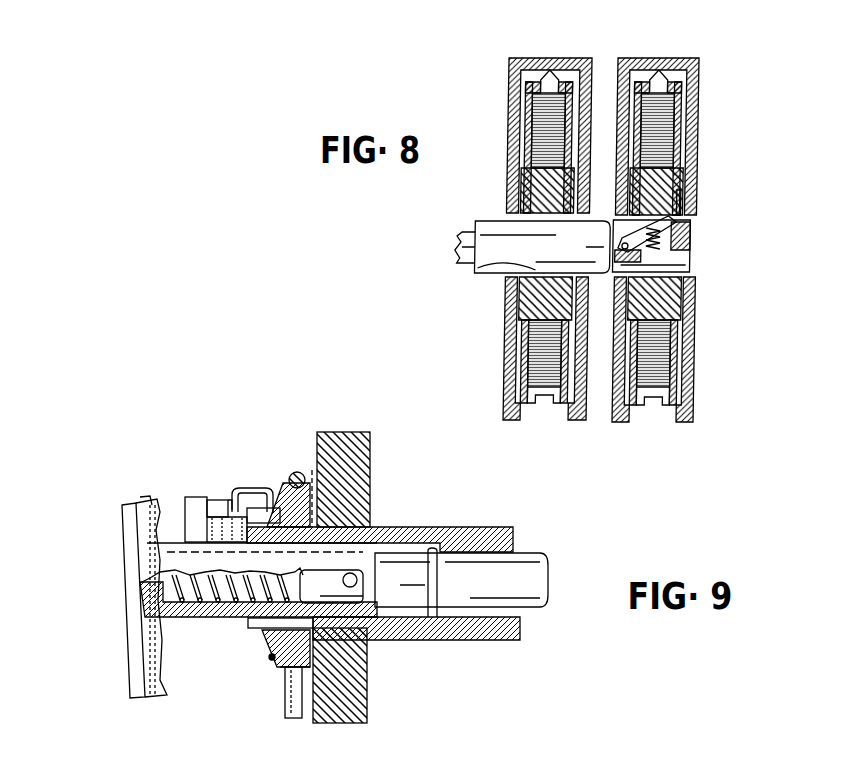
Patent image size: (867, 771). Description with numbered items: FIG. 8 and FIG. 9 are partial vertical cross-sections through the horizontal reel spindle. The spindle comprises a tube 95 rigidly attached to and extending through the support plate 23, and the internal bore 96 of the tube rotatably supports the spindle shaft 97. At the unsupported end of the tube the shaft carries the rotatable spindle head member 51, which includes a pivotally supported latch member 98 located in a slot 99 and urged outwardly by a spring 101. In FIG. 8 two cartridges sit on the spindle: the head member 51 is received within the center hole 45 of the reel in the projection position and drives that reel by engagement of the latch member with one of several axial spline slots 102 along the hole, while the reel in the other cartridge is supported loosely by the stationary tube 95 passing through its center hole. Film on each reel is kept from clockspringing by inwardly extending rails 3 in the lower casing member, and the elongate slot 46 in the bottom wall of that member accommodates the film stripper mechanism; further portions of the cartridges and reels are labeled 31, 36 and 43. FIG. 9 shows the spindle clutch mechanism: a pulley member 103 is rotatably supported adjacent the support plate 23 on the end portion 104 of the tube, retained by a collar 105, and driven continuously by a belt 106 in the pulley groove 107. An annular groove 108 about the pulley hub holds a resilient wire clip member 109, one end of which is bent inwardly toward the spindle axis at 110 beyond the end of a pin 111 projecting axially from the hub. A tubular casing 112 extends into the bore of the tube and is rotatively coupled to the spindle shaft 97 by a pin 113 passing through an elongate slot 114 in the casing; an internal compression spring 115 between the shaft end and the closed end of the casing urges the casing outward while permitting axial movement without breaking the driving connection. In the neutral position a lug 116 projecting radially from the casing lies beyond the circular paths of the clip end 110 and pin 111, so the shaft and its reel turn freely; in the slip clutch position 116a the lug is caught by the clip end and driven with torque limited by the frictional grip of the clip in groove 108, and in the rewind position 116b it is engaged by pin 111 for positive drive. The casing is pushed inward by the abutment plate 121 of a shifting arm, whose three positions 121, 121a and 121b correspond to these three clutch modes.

In FIG. 8, the inwardly extending rails 3 is at (707, 328).
In FIG. 9, the support plate 23 is at (362, 712).
In FIG. 8, the solenoid housing 31 is at (515, 350).
In FIG. 8, the coil 36 is at (523, 302).
In FIG. 8, the bobbin end 43 is at (552, 72).
In FIG. 8, the center hole 45 is at (490, 266).
In FIG. 8, the elongate slot 46 is at (546, 408).
In FIG. 8, the spindle head member 51 is at (701, 262).
In FIG. 8, the tube 95 is at (496, 222).
In FIG. 9, the tube 95 is at (500, 640).
In FIG. 9, the internal bore 96 is at (520, 555).
In FIG. 8, the spindle shaft 97 is at (460, 237).
In FIG. 9, the spindle shaft 97 is at (540, 580).
In FIG. 8, the latch member 98 is at (686, 216).
In FIG. 8, the slot 99 is at (626, 232).
In FIG. 8, the spring 101 is at (684, 241).
In FIG. 8, the axial spline slots 102 is at (687, 207).
In FIG. 9, the pulley member 103 is at (320, 478).
In FIG. 9, the end portion 104 is at (245, 620).
In FIG. 9, the collar 105 is at (257, 630).
In FIG. 9, the belt 106 is at (284, 705).
In FIG. 9, the pulley groove 107 is at (285, 670).
In FIG. 9, the annular groove 108 is at (268, 660).
In FIG. 9, the resilient wire clip member 109 is at (296, 472).
In FIG. 9, the end portion of clip member 110 is at (240, 498).
In FIG. 9, the pin 111 is at (259, 512).
In FIG. 9, the tubular casing 112 is at (390, 540).
In FIG. 9, the pin 113 is at (343, 580).
In FIG. 9, the elongate slot 114 is at (330, 573).
In FIG. 9, the internal compression spring 115 is at (202, 600).
In FIG. 9, the lug 116 is at (190, 510).
In FIG. 9, the lug in slip clutch position 116a is at (215, 500).
In FIG. 9, the lug in rewind clutch position 116b is at (253, 498).
In FIG. 9, the abutment plate 121 is at (122, 520).
In FIG. 9, the abutment plate in slip clutch position 121a is at (140, 497).
In FIG. 9, the abutment plate in rewind clutch position 121b is at (147, 505).